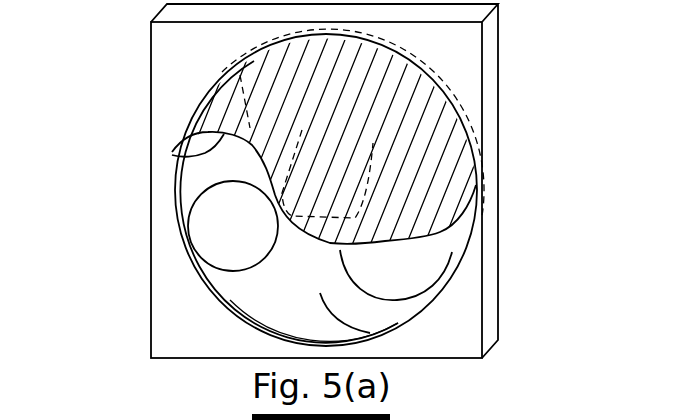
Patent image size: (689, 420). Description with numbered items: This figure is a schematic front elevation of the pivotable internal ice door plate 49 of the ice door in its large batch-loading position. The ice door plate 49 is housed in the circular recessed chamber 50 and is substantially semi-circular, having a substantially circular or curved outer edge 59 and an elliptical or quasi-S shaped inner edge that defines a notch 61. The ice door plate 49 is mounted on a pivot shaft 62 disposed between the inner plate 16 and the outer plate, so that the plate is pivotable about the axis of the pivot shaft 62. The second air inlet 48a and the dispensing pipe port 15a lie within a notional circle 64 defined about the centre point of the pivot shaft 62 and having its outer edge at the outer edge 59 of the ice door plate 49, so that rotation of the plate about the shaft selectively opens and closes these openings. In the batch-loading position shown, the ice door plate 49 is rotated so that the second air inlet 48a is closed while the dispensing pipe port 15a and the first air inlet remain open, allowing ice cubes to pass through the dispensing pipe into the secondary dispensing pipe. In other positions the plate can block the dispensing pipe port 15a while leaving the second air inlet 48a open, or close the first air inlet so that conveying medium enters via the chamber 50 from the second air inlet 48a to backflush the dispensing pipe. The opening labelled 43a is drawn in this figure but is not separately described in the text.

The inner plate 16 is at (488, 289).
The outer edge 59 is at (418, 62).
The pivot shaft 62 is at (268, 300).
The recessed chamber 50 is at (398, 333).
The notional circle 64 is at (480, 215).
The second air inlet 48a is at (215, 68).
The ice door plate 49 is at (444, 124).
The dispensing pipe port 15a is at (205, 240).
The notch 61 is at (175, 155).
The chamber 43a is at (400, 272).